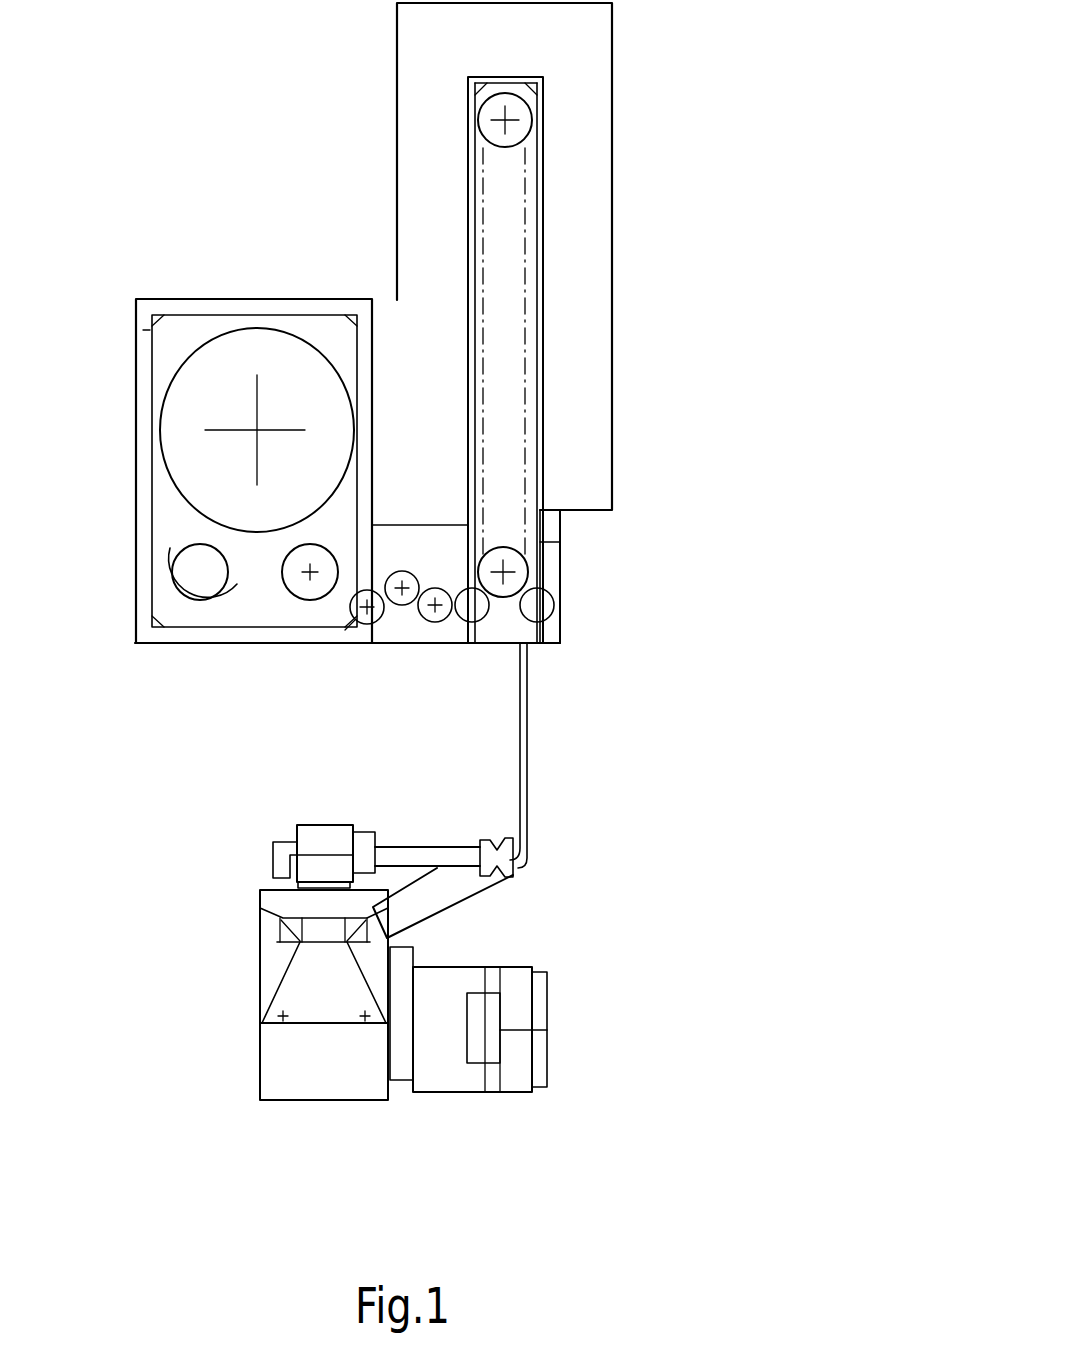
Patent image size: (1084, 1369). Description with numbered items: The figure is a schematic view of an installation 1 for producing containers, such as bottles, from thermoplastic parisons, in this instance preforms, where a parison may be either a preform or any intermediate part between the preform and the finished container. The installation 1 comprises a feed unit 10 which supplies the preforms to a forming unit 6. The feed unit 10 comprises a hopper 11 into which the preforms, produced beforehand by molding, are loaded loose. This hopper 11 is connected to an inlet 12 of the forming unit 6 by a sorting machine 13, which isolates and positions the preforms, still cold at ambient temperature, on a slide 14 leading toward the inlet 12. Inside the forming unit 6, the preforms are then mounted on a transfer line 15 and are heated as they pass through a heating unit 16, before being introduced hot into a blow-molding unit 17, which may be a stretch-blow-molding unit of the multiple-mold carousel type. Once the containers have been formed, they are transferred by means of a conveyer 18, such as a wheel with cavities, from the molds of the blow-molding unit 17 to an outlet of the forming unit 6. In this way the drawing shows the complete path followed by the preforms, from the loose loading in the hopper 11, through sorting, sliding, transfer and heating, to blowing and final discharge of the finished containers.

The installation 1 is at (640, 303).
The forming unit 6 is at (327, 208).
The feed unit 10 is at (265, 928).
The hopper 11 is at (273, 1065).
The inlet 12 is at (532, 643).
The sorting machine 13 is at (335, 840).
The slide 14 is at (528, 793).
The transfer line 15 is at (560, 547).
The heating unit 16 is at (570, 222).
The blow-molding unit 17 is at (265, 336).
The conveyer 18 is at (198, 603).